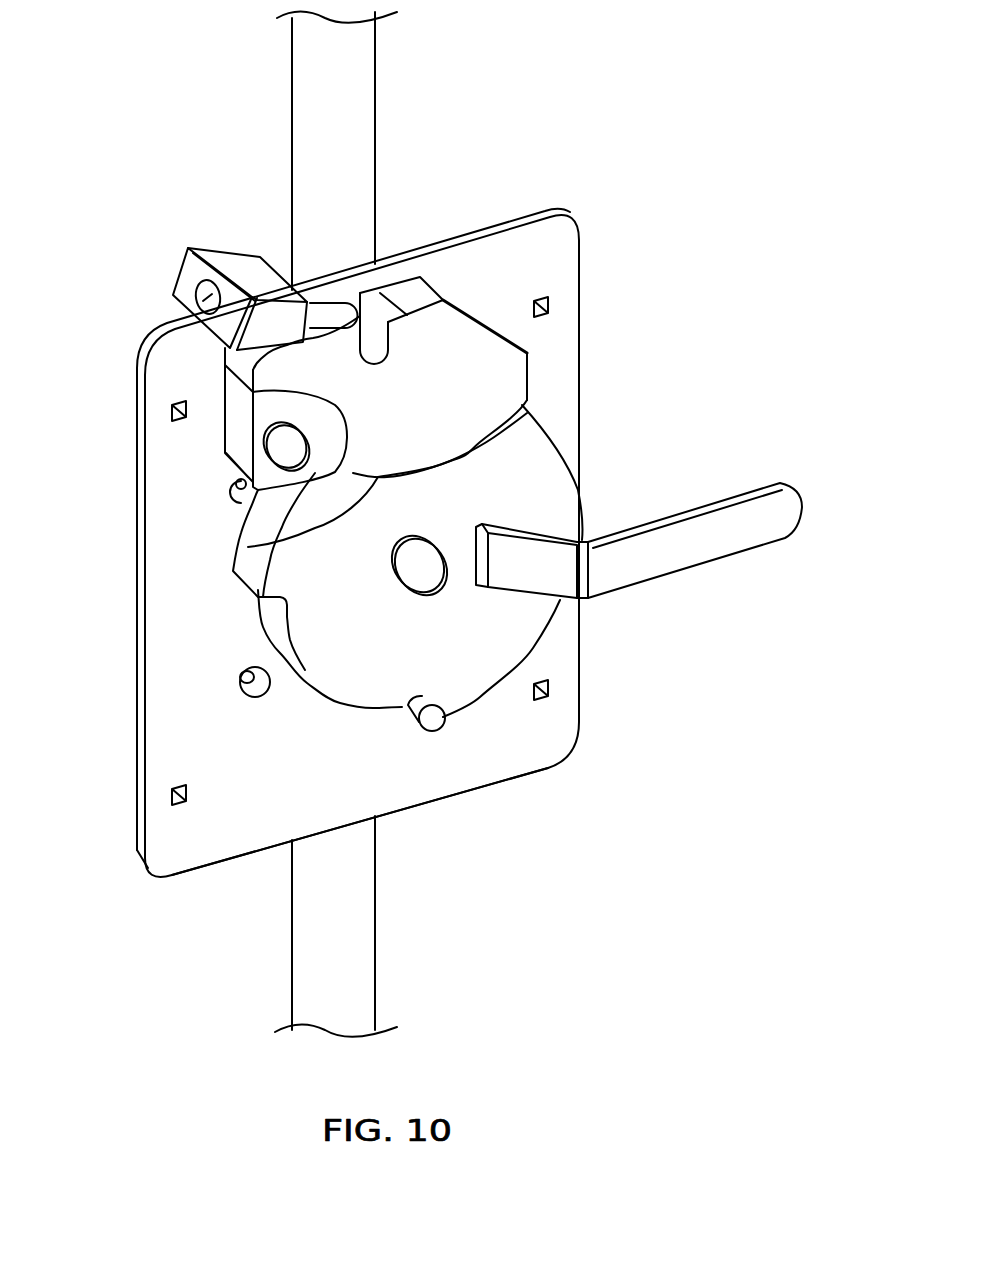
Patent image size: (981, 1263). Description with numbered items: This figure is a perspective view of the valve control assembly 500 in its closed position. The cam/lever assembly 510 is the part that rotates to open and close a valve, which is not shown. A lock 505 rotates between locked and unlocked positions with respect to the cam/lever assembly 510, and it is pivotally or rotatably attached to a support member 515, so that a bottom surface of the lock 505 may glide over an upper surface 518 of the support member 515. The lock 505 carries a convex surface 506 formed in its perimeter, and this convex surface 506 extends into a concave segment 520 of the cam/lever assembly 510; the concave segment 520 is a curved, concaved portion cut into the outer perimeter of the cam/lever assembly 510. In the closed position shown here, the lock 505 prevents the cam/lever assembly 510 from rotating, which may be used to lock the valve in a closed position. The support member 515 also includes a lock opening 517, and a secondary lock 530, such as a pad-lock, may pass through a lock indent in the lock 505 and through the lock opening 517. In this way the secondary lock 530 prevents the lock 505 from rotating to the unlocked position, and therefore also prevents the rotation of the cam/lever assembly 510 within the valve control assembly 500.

The valve control assembly 500 is at (571, 132).
The lock 505 is at (423, 333).
The convex surface 506 is at (252, 391).
The cam/lever assembly 510 is at (543, 491).
The support member 515 is at (562, 371).
The lock opening 517 is at (356, 312).
The upper surface 518 is at (523, 745).
The concave segment 520 is at (248, 547).
The secondary lock 530 is at (188, 277).